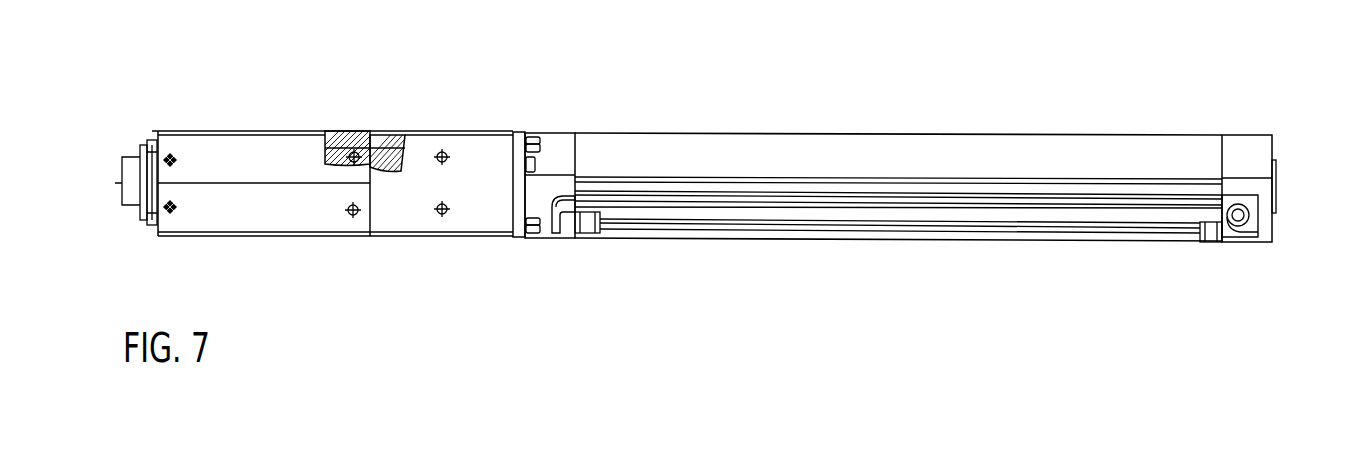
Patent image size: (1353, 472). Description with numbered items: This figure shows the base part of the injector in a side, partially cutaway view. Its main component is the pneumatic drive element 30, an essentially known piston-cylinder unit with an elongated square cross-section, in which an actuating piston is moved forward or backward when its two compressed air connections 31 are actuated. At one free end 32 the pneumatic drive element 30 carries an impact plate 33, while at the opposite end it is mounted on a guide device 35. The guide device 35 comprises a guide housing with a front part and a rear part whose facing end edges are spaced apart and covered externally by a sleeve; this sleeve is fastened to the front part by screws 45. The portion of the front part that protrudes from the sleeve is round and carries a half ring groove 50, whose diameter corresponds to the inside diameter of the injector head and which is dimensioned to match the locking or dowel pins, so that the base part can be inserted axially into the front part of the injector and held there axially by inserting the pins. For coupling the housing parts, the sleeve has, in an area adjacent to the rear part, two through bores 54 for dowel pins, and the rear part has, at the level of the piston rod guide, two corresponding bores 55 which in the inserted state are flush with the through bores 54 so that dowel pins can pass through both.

The pneumatic drive element 30 is at (938, 148).
The compressed air connections 31 is at (578, 207).
The free end 32 is at (1278, 139).
The impact plate 33 is at (1277, 177).
The guide device 35 is at (494, 247).
The screws 45 is at (172, 151).
The half ring groove 50 is at (150, 223).
The through bores 54 is at (346, 168).
The bores 55 is at (443, 163).